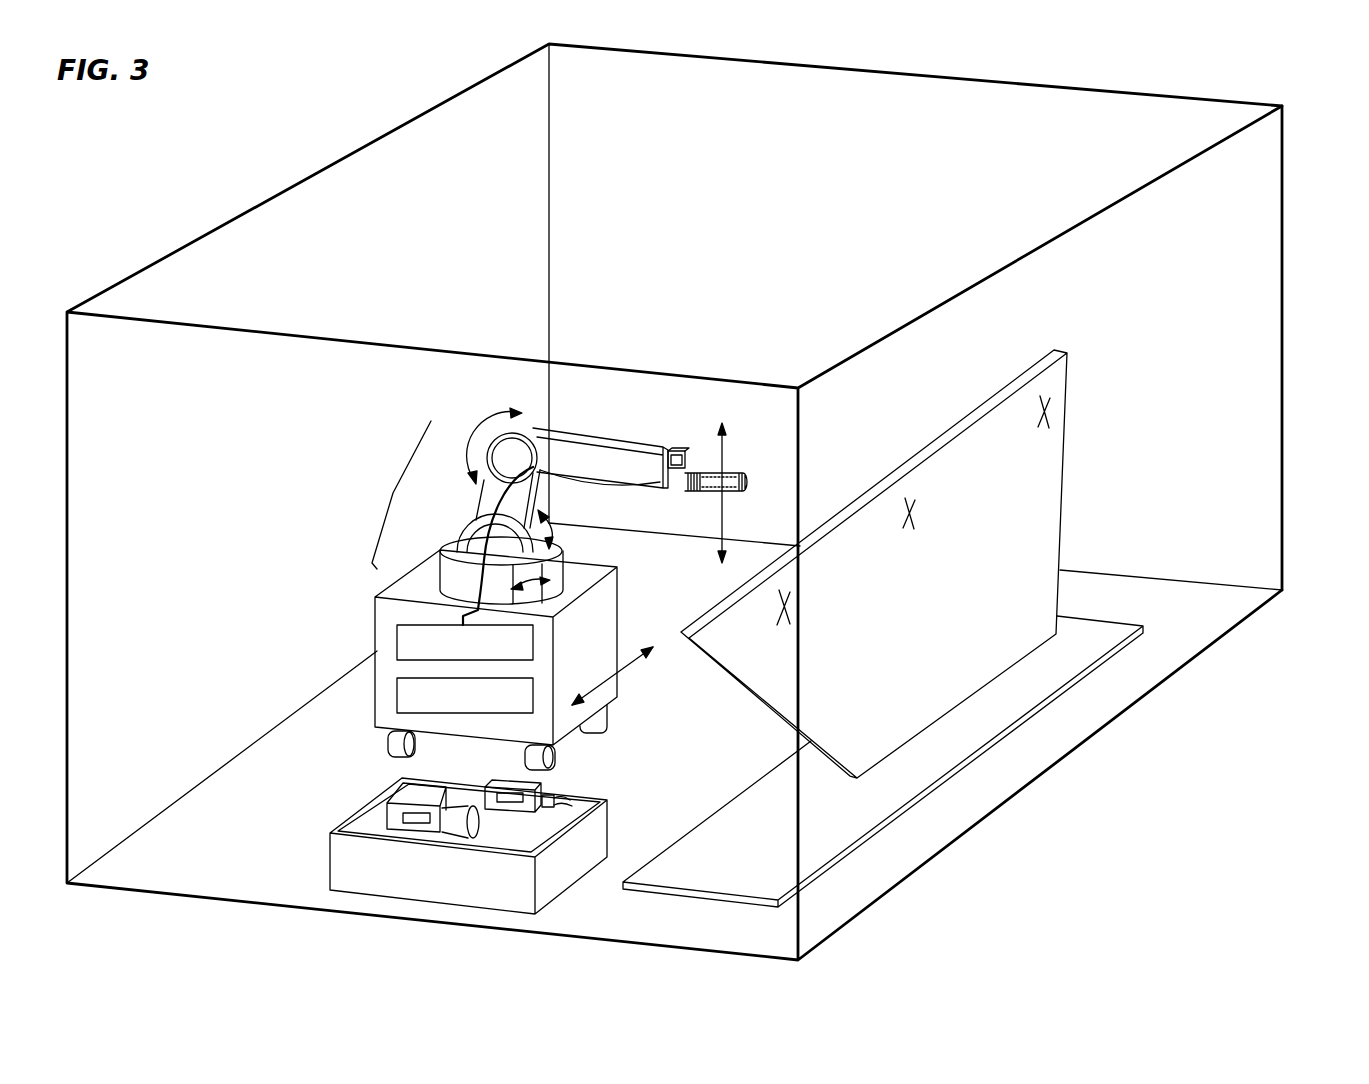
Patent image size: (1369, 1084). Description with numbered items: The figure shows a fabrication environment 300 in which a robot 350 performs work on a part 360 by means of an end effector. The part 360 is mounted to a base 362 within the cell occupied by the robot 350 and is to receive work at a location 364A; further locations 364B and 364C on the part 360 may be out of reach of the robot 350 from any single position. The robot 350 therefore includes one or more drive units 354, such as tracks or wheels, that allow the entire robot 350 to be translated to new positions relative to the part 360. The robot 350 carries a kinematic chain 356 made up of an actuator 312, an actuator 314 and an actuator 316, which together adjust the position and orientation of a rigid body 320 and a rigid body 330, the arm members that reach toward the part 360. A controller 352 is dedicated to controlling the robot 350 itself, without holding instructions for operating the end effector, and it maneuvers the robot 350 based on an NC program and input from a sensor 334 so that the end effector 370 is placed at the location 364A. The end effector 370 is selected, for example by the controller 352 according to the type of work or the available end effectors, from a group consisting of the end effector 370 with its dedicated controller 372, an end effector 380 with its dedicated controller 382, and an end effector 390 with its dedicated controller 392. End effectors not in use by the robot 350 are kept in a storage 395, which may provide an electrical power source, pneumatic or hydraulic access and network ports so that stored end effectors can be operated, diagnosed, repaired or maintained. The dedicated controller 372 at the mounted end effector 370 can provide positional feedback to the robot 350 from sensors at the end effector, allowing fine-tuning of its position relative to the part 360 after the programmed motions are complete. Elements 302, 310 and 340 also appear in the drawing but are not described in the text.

The fabrication environment 300 is at (1230, 97).
The wall 302 is at (1272, 306).
The mobile cart 310 is at (602, 622).
The actuator 312 is at (566, 552).
The actuator 314 is at (473, 529).
The actuator 316 is at (530, 430).
The rigid body 320 is at (483, 497).
The rigid body 330 is at (647, 447).
The sensor 334 is at (677, 451).
The guide 340 is at (615, 479).
The robot 350 is at (452, 399).
The controller 352 is at (397, 642).
The drive unit 354 is at (397, 704).
The kinematic chain 356 is at (390, 495).
The part 360 is at (1048, 486).
The base 362 is at (1118, 630).
The location 364A is at (911, 512).
The location 364B is at (1047, 411).
The location 364C is at (784, 607).
The end effector 370 is at (708, 492).
The dedicated controller 372 is at (727, 490).
The end effector 380 is at (547, 803).
The dedicated controller 382 is at (505, 792).
The end effector 390 is at (457, 829).
The dedicated controller 392 is at (413, 812).
The storage 395 is at (355, 867).